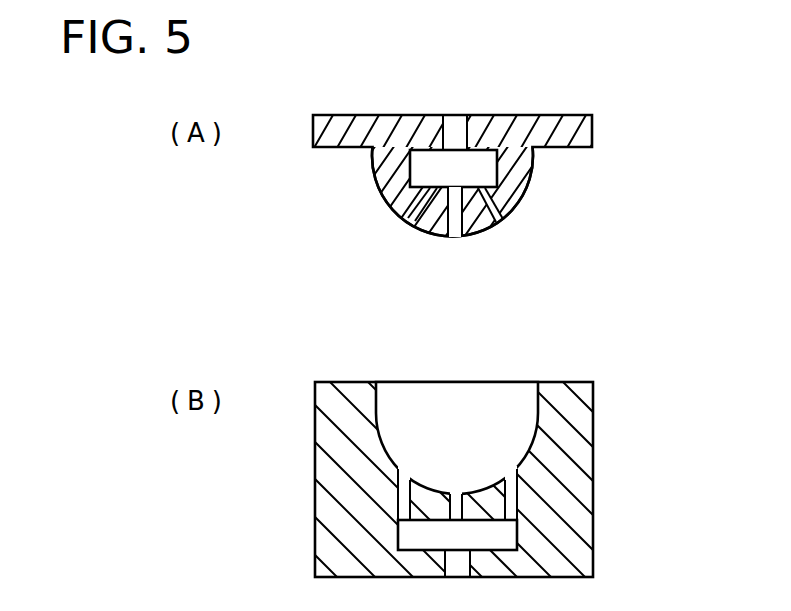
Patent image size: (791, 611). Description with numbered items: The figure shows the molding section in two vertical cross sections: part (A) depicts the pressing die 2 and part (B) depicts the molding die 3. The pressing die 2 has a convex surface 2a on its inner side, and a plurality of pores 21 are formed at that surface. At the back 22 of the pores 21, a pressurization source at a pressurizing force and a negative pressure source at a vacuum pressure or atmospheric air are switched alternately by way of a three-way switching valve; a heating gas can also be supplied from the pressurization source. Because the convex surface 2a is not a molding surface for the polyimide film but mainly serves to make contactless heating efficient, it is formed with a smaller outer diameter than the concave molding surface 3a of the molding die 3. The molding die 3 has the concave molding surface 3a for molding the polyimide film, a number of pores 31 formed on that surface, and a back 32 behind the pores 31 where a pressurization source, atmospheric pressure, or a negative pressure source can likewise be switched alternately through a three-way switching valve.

The pressing die 2 is at (362, 113).
The convex surface 2a is at (383, 190).
The pores 21 is at (455, 237).
The back of the pores 22 is at (450, 165).
The molding die 3 is at (599, 460).
The concave molding surface 3a is at (532, 442).
The pores 31 is at (460, 494).
The back of the pores 32 is at (504, 540).